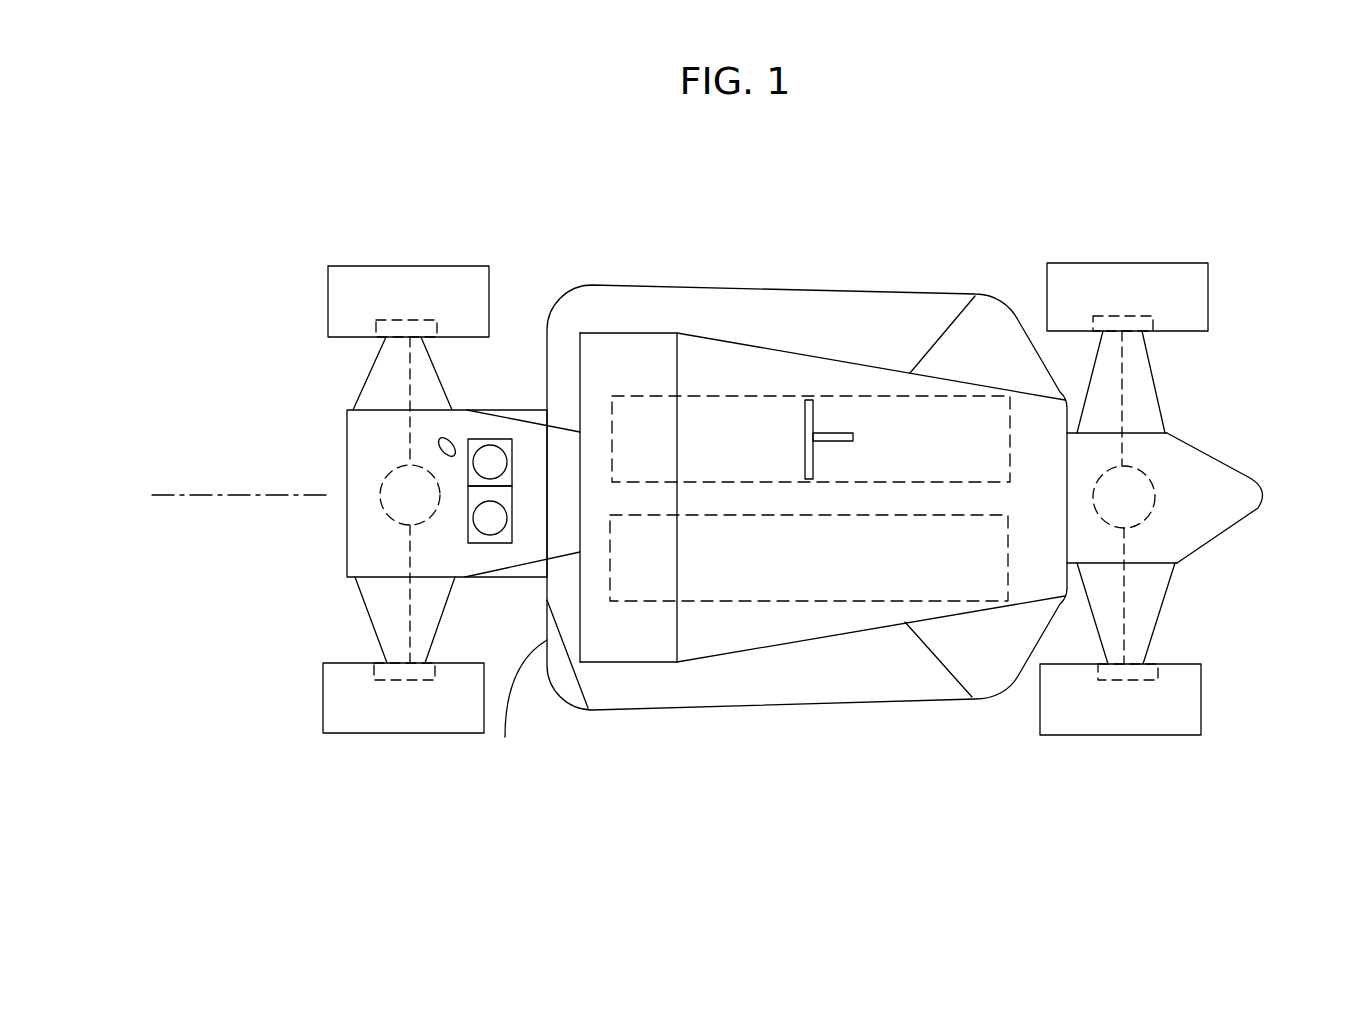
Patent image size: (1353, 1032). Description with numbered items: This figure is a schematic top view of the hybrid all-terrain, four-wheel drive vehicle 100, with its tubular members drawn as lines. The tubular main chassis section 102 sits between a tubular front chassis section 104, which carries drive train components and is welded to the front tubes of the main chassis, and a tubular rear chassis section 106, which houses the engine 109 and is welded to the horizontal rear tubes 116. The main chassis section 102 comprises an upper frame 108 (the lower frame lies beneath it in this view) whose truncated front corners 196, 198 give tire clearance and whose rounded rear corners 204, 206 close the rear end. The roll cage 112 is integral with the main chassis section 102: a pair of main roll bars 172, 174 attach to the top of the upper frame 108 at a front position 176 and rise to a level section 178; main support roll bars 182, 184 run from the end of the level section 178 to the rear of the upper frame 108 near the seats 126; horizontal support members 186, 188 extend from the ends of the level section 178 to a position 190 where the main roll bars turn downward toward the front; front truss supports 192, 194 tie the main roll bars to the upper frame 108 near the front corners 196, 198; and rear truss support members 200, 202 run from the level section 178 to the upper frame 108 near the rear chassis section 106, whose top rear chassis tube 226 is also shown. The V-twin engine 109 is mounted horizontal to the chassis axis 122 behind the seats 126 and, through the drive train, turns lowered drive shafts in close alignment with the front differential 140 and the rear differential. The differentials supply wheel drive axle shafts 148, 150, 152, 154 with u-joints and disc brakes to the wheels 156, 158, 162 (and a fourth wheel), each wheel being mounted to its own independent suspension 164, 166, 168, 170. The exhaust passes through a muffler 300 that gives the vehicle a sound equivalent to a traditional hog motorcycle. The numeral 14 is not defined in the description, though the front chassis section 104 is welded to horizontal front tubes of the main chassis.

The hybrid vehicle 100 is at (782, 747).
The main chassis section 102 is at (956, 765).
The front chassis section 104 is at (1281, 469).
The rear chassis section 106 is at (360, 268).
The upper frame 108 is at (757, 704).
The engine 109 is at (468, 500).
The roll cage 112 is at (892, 327).
The front body section 14 is at (1067, 543).
The horizontal rear tubes 116 is at (518, 706).
The chassis axis 122 is at (263, 495).
The seats 126 is at (810, 498).
The front differential 140 is at (1153, 487).
The wheel drive axle shaft 148 is at (1118, 378).
The wheel drive axle shaft 150 is at (1122, 598).
The wheel drive axle shaft 152 is at (410, 397).
The wheel drive axle shaft 154 is at (403, 642).
The wheel 156 is at (1103, 263).
The wheel 158 is at (1047, 733).
The wheel 162 is at (418, 735).
The independent suspension 164 is at (1162, 413).
The independent suspension 166 is at (1150, 647).
The independent suspension 168 is at (365, 387).
The independent suspension 170 is at (365, 612).
The main roll bar 172 is at (852, 365).
The main roll bar 174 is at (810, 640).
The front position 176 is at (1065, 400).
The level section 178 is at (666, 252).
The main support roll bar 182 is at (585, 325).
The main support roll bar 184 is at (588, 703).
The horizontal support member 186 is at (677, 618).
The horizontal support member 188 is at (580, 639).
The position 190 is at (677, 333).
The front truss support 192 is at (958, 317).
The front truss support 194 is at (942, 665).
The front corner 196 is at (1017, 675).
The front corner 198 is at (1023, 325).
The rear truss support member 200 is at (580, 333).
The rear truss support member 202 is at (560, 623).
The rounded rear corner 204 is at (567, 710).
The rounded rear corner 206 is at (547, 403).
The top rear chassis tube 226 is at (347, 472).
The muffler 300 is at (468, 480).